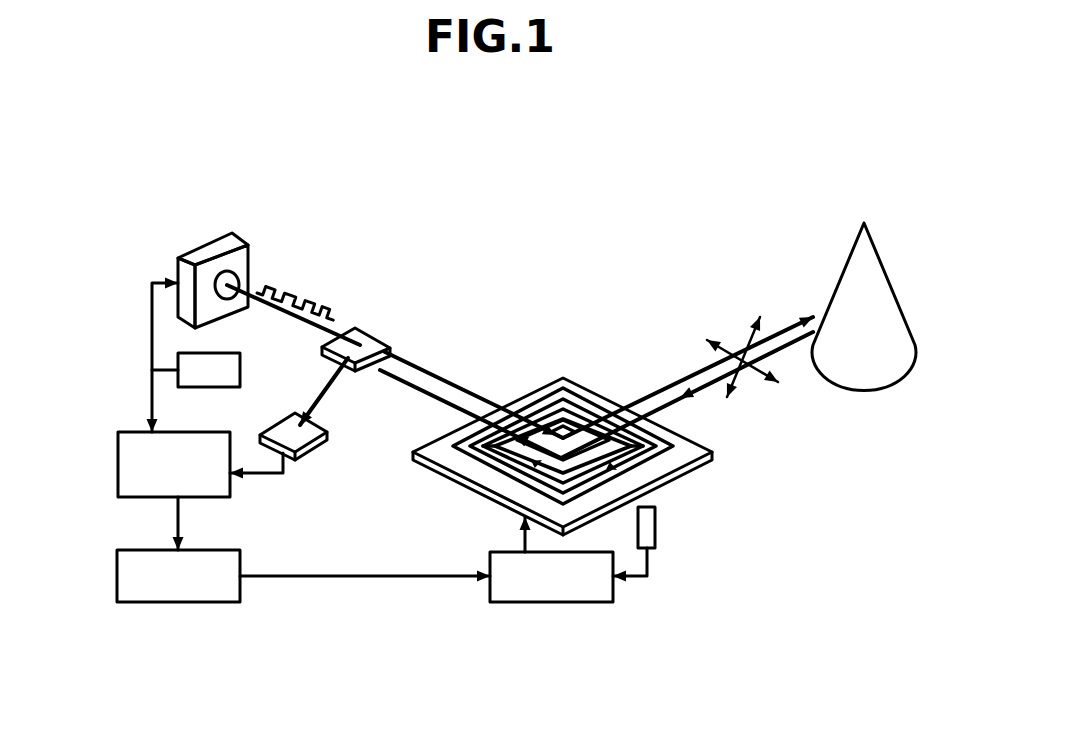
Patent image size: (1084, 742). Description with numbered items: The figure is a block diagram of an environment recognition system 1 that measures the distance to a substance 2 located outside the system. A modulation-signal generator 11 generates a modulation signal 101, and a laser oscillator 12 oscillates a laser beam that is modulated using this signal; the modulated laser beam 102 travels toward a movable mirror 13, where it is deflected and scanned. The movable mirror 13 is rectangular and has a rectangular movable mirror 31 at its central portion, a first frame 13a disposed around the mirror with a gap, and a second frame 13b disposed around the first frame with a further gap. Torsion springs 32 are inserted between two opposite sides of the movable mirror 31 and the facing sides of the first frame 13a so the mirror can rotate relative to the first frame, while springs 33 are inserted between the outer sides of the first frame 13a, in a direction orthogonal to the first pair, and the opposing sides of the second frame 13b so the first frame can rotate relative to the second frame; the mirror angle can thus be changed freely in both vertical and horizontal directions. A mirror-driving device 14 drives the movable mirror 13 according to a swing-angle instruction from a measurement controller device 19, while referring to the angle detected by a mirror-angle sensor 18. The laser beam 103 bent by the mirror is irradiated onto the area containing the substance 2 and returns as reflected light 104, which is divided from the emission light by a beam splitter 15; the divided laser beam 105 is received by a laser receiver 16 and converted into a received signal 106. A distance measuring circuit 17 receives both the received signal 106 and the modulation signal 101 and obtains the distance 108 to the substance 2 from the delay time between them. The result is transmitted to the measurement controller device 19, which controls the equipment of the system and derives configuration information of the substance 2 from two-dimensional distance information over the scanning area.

The environment recognition system 1 is at (723, 212).
The substance 2 is at (845, 307).
The modulation-signal generator 11 is at (205, 353).
The laser oscillator 12 is at (202, 240).
The movable mirror 13 is at (545, 381).
The first frame 13a is at (577, 408).
The second frame 13b is at (452, 458).
The mirror-driving device 14 is at (520, 602).
The beam splitter 15 is at (368, 335).
The laser receiver 16 is at (308, 450).
The distance measuring circuit 17 is at (208, 498).
The mirror-angle sensor 18 is at (655, 524).
The measurement controller device 19 is at (214, 602).
The movable mirror 31 is at (700, 466).
The torsion springs 32 is at (510, 467).
The springs 33 is at (627, 483).
The modulation signal 101 is at (150, 315).
The laser beam 102 is at (302, 322).
The laser beam 103 is at (690, 375).
The reflected light 104 is at (704, 397).
The laser beam 105 is at (324, 395).
The received signal 106 is at (268, 476).
The distance 108 is at (175, 523).